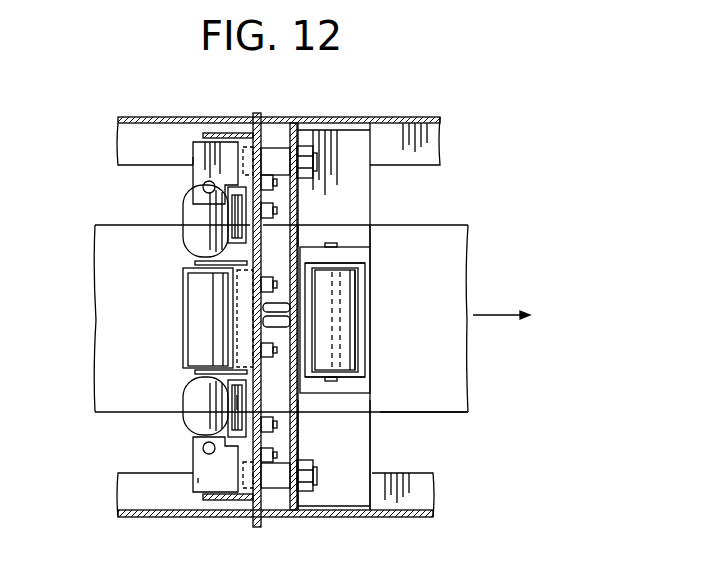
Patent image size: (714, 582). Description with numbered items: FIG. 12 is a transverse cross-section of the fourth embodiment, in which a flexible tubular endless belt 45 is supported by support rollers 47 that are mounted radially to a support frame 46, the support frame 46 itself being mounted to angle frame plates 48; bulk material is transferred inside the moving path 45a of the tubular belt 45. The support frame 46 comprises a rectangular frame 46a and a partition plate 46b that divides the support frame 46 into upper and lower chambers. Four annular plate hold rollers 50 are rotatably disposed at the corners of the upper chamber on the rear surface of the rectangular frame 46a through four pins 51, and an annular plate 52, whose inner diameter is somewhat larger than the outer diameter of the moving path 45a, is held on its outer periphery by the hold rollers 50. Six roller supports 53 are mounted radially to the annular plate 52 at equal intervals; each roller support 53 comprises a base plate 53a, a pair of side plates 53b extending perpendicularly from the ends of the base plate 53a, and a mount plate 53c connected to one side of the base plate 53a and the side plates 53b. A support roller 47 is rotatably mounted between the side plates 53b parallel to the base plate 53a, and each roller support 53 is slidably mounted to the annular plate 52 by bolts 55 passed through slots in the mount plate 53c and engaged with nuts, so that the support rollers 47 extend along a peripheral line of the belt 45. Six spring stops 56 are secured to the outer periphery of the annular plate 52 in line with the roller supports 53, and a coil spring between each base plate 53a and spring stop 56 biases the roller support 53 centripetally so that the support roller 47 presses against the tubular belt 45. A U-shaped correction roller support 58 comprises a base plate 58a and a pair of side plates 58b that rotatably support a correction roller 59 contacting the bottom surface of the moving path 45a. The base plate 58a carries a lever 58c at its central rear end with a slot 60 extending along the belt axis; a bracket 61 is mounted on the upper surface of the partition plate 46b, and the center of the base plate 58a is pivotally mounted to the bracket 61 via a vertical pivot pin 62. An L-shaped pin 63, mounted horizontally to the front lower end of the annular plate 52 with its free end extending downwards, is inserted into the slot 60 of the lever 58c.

The flexible tubular endless belt 45 is at (512, 219).
The moving path 45a is at (433, 413).
The support frame 46 is at (358, 513).
The rectangular frame 46a is at (330, 512).
The partition plate 46b is at (363, 487).
The support roller 47 is at (182, 208).
The angle frame plate 48 is at (427, 117).
The annular plate hold roller 50 is at (264, 146).
The pin 51 is at (281, 143).
The annular plate 52 is at (256, 114).
The roller support 53 is at (190, 142).
The base plate 53a is at (240, 298).
The side plate 53b is at (198, 158).
The mount plate 53c is at (240, 332).
The bolt 55 is at (228, 236).
The spring stop 56 is at (213, 133).
The correction roller support 58 is at (355, 382).
The base plate 58a is at (363, 338).
The side plate 58b is at (363, 263).
The lever 58c is at (283, 302).
The guide bar 59 is at (357, 317).
The slot 60 is at (290, 318).
The bracket 61 is at (350, 243).
The vertical pivot pin 62 is at (352, 288).
The L-shaped pin 63 is at (282, 322).